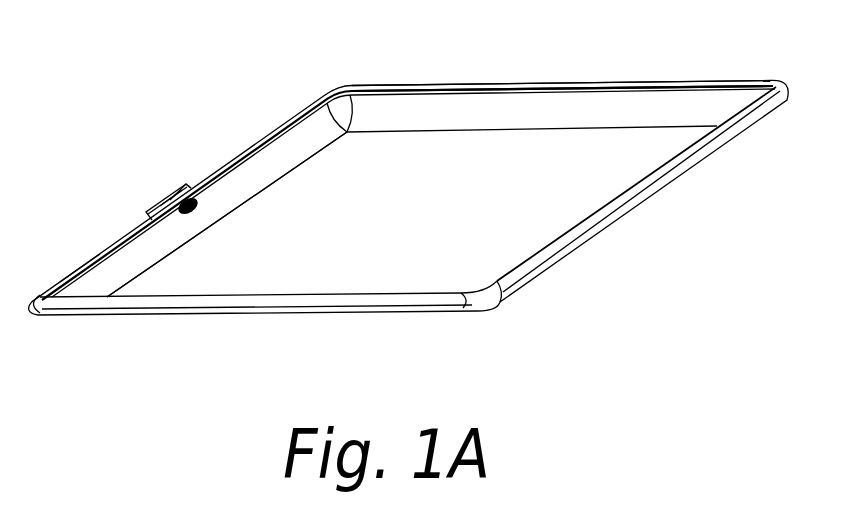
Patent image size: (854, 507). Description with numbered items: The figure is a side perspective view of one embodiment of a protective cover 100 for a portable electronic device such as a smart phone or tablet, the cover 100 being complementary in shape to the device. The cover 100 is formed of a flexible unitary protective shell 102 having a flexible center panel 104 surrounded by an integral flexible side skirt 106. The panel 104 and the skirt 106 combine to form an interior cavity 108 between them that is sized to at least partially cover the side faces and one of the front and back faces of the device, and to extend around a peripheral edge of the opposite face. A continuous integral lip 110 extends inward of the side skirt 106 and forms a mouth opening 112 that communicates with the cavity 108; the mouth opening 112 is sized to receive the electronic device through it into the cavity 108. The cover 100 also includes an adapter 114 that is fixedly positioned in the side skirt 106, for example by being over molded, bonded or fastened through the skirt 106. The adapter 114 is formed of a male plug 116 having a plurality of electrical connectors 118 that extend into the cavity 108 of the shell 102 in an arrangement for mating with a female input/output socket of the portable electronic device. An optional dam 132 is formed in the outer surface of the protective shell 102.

The protective cover 100 is at (486, 310).
The flexible unitary protective shell 102 is at (733, 82).
The flexible center panel 104 is at (317, 187).
The flexible side skirt 106 is at (388, 108).
The interior cavity 108 is at (418, 212).
The continuous integral lip 110 is at (412, 97).
The mouth opening 112 is at (78, 268).
The adapter 114 is at (160, 201).
The male plug 116 is at (198, 207).
The electrical connectors 118 is at (188, 183).
The dam 132 is at (182, 189).